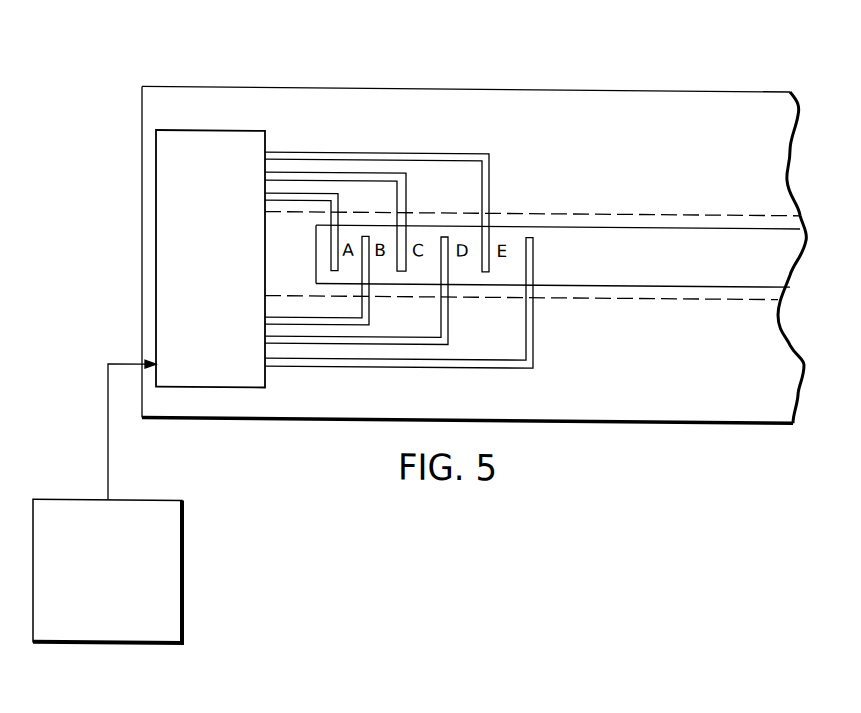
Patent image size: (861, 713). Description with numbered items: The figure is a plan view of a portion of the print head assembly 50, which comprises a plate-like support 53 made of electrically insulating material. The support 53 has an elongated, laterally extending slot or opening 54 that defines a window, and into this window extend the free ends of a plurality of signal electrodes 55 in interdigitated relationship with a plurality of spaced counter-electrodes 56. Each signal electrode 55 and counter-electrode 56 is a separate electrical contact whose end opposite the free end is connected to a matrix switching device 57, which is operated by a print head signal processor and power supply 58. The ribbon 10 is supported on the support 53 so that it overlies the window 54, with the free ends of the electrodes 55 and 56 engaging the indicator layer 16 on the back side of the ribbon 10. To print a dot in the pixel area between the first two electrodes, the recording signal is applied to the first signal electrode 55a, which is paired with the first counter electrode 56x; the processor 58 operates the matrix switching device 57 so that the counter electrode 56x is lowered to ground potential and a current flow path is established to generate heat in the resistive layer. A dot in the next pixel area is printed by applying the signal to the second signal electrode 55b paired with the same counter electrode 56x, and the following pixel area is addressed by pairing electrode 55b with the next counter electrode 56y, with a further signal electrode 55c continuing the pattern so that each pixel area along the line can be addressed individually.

The ribbon 10 is at (697, 206).
The indicator layer 16 is at (709, 262).
The print head assembly 50 is at (474, 212).
The plate-like support 53 is at (531, 104).
The slot or opening 54 is at (590, 236).
The signal electrodes 55 is at (401, 181).
The first signal electrode 55a is at (338, 200).
The second signal electrode 55b is at (406, 199).
The third signal electrode 55c is at (489, 181).
The counter-electrodes 56 is at (423, 326).
The first counter electrode 56x is at (370, 306).
The next counter electrode 56y is at (448, 308).
The matrix switching device 57 is at (203, 374).
The print head signal processor and power supply 58 is at (53, 505).